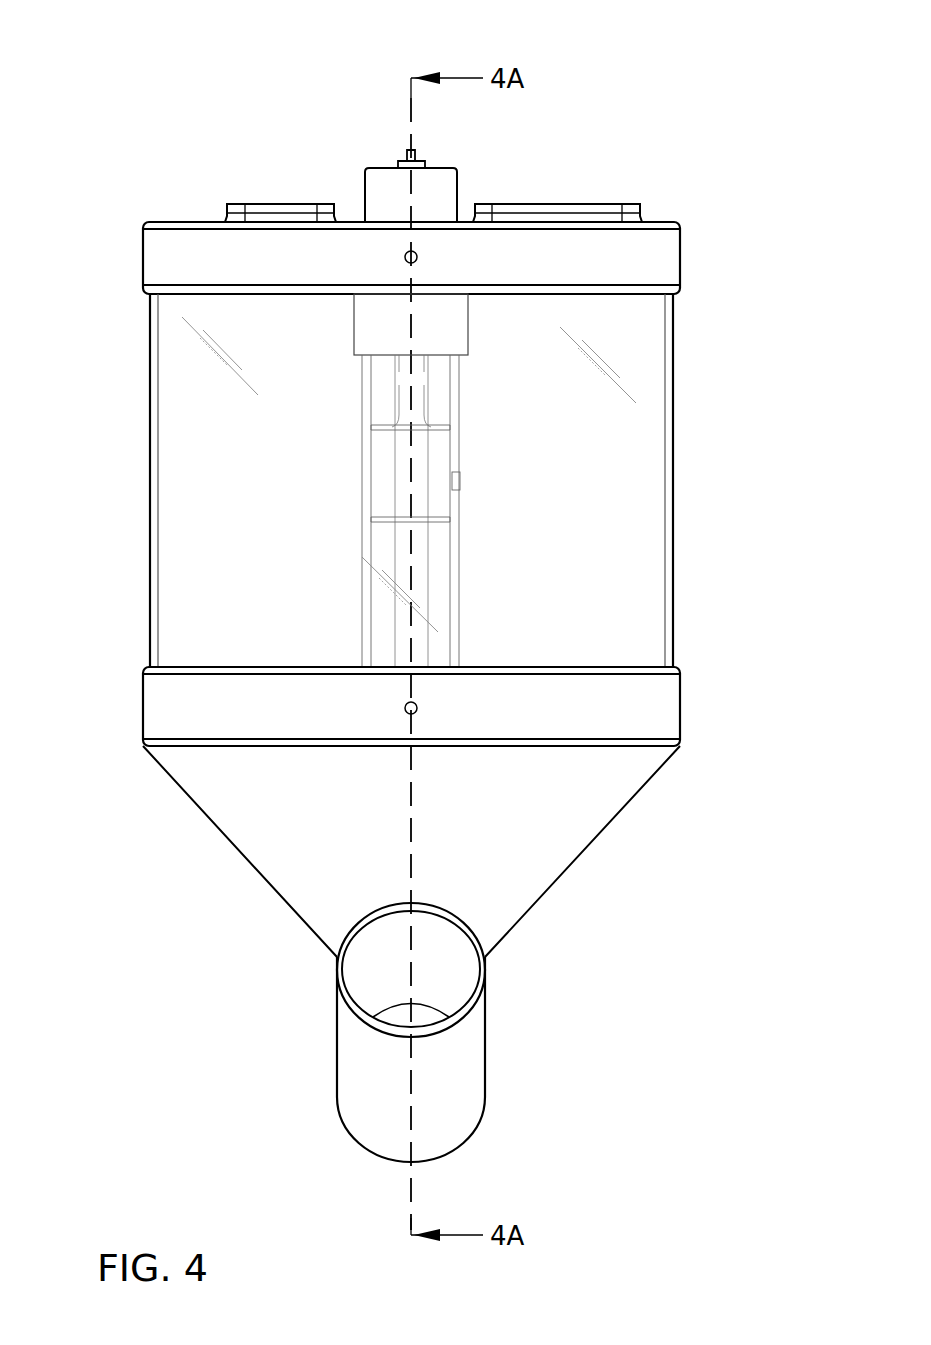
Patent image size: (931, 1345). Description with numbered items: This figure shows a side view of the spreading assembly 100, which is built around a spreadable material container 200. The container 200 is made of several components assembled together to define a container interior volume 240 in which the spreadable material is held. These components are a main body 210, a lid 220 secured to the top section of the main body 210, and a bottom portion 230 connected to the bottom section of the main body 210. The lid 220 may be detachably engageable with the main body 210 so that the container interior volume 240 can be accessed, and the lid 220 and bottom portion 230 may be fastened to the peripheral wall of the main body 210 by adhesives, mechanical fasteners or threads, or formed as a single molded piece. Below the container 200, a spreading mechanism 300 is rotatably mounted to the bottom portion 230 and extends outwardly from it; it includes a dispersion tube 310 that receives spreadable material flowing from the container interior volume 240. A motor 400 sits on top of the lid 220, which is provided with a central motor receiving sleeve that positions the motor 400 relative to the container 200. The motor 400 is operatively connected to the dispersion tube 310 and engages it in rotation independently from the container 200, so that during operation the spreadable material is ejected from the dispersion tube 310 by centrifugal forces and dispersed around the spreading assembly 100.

The spreading assembly 100 is at (73, 91).
The spreadable material container 200 is at (720, 446).
The main body 210 is at (673, 562).
The lid 220 is at (665, 254).
The bottom portion 230 is at (602, 805).
The container interior volume 240 is at (583, 402).
The spreading mechanism 300 is at (284, 1095).
The dispersion tube 310 is at (337, 1028).
The motor 400 is at (440, 192).